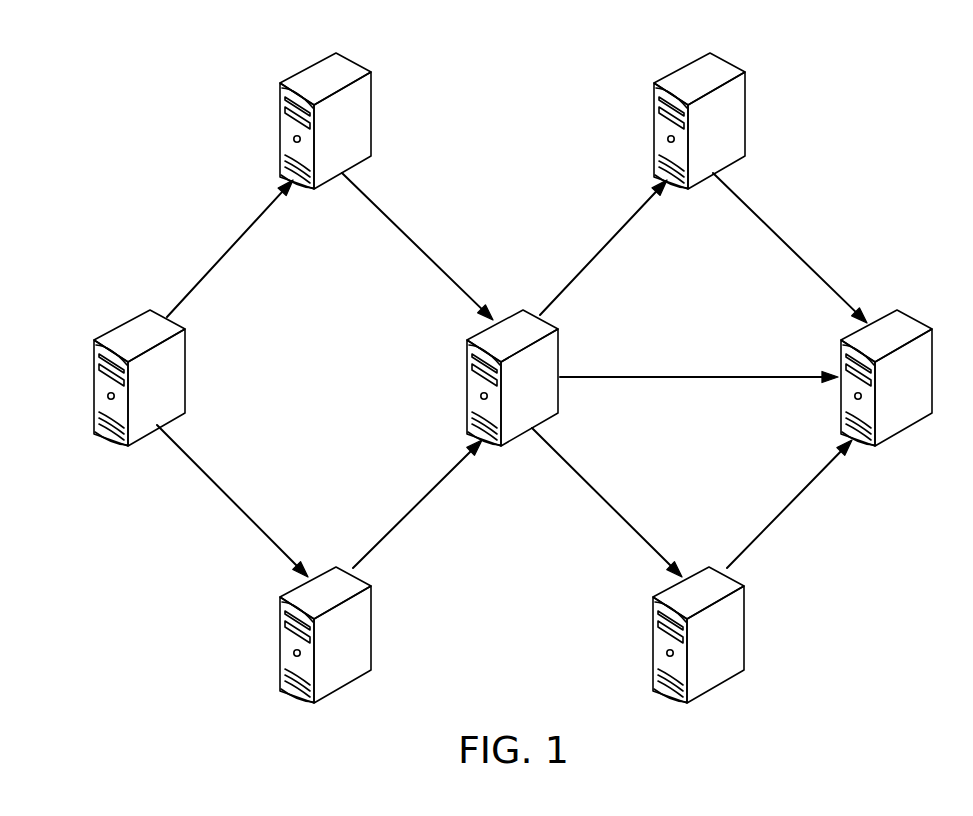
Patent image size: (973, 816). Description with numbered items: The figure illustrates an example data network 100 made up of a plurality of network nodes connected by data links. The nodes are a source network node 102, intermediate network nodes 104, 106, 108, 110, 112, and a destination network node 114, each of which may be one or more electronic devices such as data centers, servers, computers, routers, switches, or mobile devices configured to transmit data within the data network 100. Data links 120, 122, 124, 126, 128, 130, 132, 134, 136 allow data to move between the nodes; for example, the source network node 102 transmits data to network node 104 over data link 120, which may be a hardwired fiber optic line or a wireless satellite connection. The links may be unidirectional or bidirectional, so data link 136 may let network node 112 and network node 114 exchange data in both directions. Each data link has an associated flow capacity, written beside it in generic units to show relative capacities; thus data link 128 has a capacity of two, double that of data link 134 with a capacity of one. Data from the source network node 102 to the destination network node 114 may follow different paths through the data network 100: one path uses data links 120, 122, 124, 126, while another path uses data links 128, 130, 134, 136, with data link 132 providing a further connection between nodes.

The data network 100 is at (142, 93).
The source network node 102 is at (155, 322).
The network node 104 is at (340, 65).
The network node 106 is at (355, 663).
The network node 108 is at (545, 350).
The network node 110 is at (714, 65).
The network node 112 is at (729, 663).
The destination network node 114 is at (901, 322).
The data link 120 is at (210, 268).
The data link 122 is at (463, 288).
The data link 124 is at (585, 268).
The data link 126 is at (835, 283).
The data link 128 is at (203, 473).
The data link 130 is at (445, 480).
The data link 132 is at (637, 380).
The data link 134 is at (577, 475).
The data link 136 is at (808, 480).